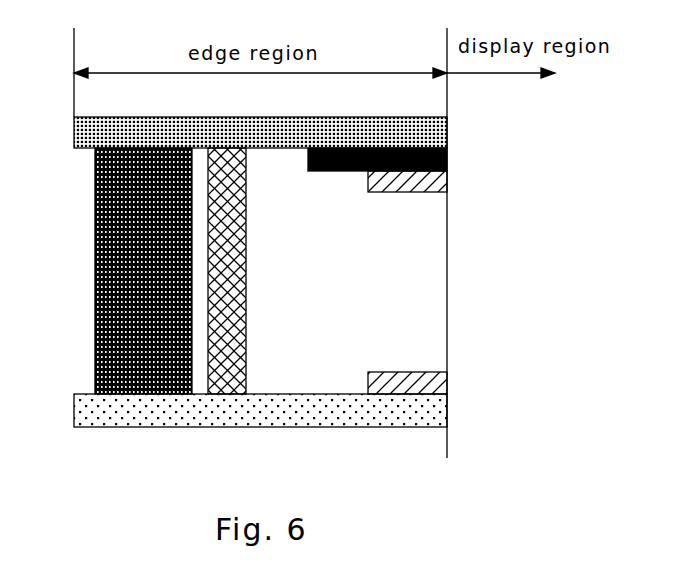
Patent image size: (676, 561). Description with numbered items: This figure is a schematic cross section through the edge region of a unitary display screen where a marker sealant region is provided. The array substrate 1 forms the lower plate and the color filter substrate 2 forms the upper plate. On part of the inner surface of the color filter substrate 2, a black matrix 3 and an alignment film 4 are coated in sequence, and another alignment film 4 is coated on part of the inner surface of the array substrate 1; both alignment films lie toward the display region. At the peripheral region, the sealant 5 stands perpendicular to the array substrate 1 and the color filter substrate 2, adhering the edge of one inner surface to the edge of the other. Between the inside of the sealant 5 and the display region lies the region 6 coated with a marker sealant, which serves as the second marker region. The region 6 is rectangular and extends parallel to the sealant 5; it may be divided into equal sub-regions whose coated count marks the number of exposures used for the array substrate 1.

The array substrate 1 is at (426, 421).
The color filter substrate 2 is at (405, 137).
The black matrix 3 is at (447, 163).
The alignment film 4 is at (430, 183).
The sealant 5 is at (132, 362).
The region coated with a marker sealant 6 is at (223, 252).